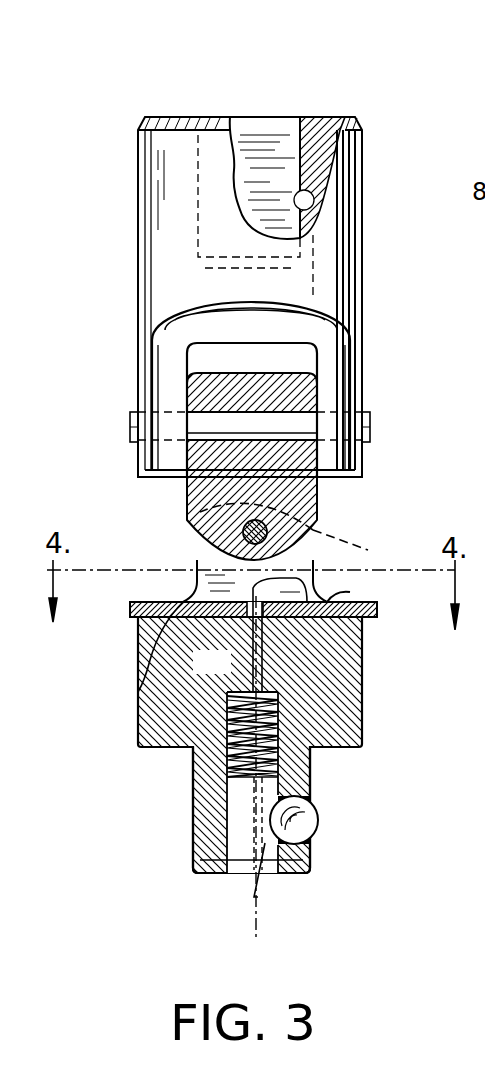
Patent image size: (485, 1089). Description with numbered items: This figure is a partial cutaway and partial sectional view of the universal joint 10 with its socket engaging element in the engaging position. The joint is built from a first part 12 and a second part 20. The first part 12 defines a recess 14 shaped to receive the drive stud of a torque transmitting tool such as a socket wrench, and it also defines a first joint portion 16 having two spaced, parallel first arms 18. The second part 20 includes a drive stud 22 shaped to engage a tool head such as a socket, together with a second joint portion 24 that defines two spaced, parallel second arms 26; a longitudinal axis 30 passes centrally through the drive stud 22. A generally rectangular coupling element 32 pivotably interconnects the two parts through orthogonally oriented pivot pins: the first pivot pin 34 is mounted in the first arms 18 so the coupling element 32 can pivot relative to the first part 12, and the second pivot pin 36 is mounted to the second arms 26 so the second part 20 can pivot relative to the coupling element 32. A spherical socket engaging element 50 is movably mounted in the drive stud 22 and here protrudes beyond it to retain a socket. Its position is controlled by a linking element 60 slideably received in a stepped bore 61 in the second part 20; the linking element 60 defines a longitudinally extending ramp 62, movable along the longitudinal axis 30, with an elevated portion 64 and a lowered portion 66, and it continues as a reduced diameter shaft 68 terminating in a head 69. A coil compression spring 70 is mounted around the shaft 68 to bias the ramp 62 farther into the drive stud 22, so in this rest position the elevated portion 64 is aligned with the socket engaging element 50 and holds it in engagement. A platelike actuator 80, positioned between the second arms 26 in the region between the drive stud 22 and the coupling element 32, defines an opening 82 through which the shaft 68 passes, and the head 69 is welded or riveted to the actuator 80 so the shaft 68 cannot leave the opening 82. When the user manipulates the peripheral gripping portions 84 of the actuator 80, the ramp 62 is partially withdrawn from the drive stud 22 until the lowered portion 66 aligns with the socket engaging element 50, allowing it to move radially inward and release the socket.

The universal joint 10 is at (100, 410).
The first part 12 is at (150, 212).
The recess 14 is at (300, 120).
The first joint portion 16 is at (396, 390).
The first arms 18 is at (130, 455).
The second part 20 is at (362, 680).
The drive stud 22 is at (200, 828).
The second joint portion 24 is at (165, 586).
The second arms 26 is at (295, 470).
The longitudinal axis 30 is at (250, 921).
The coupling element 32 is at (312, 485).
The first pivot pin 34 is at (370, 430).
The second pivot pin 36 is at (200, 524).
The socket engaging element 50 is at (320, 820).
The linking element 60 is at (238, 787).
The stepped bore 61 is at (278, 712).
The ramp 62 is at (197, 857).
The elevated portion 64 is at (215, 812).
The lowered portion 66 is at (268, 877).
The reduced diameter shaft 68 is at (258, 655).
The head 69 is at (335, 594).
The spring 70 is at (227, 717).
The actuator 80 is at (148, 684).
The opening 82 is at (212, 662).
The peripheral gripping portions 84 is at (130, 606).